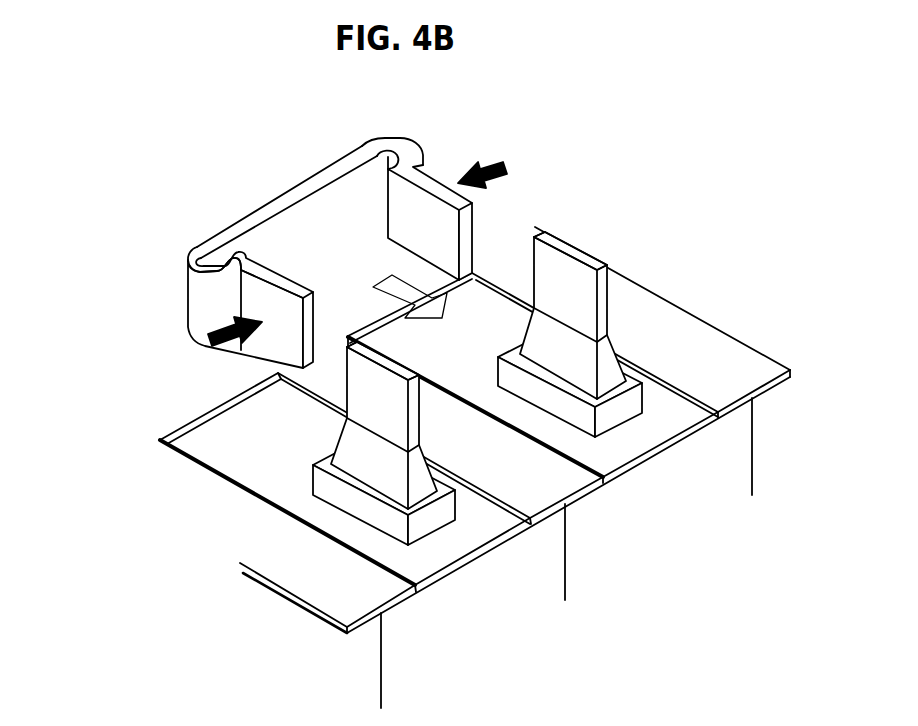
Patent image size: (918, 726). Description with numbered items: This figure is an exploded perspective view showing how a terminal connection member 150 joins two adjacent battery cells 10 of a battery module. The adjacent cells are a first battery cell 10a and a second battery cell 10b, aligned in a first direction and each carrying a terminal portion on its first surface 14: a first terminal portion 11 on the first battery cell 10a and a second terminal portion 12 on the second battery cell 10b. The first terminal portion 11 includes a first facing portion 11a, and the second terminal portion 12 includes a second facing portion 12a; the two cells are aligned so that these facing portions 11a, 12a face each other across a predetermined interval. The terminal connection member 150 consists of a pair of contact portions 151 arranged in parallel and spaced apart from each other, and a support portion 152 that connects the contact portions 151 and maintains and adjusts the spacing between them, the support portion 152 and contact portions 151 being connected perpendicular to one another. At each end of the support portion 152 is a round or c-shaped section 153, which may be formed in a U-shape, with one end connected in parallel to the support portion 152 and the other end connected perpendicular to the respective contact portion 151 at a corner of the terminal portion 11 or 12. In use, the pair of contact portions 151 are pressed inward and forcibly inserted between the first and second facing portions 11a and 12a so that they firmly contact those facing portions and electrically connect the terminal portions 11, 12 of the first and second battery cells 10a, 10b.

The battery cell 10 is at (568, 708).
The first battery cell 10a is at (518, 650).
The second battery cell 10b is at (703, 542).
The first terminal portion 11 is at (362, 469).
The first facing portion 11a is at (423, 410).
The second terminal portion 12 is at (603, 288).
The second facing portion 12a is at (553, 278).
The first surface 14 is at (238, 428).
The terminal connection member 150 is at (286, 223).
The contact portion 151 is at (293, 287).
The support portion 152 is at (297, 192).
The c-shaped section 153 is at (403, 148).